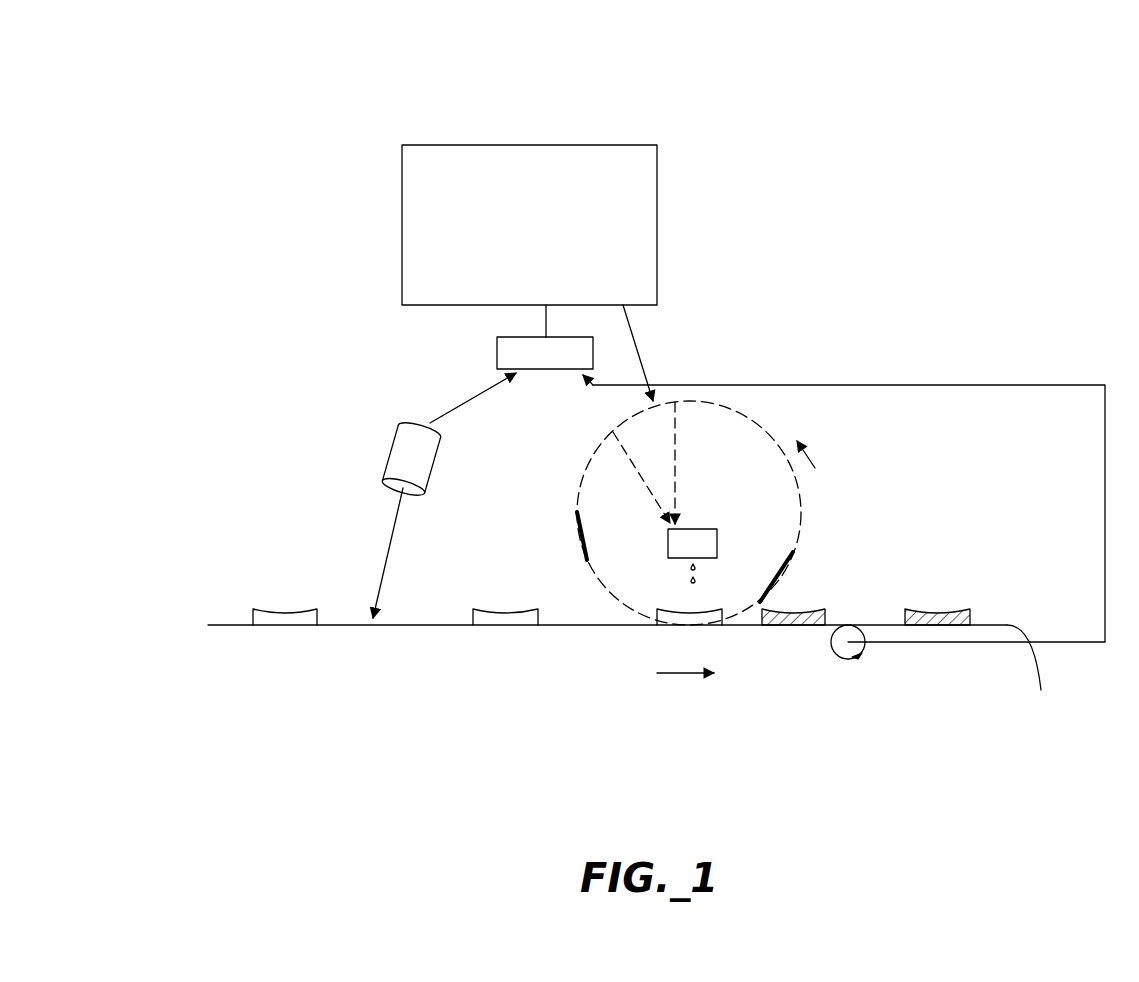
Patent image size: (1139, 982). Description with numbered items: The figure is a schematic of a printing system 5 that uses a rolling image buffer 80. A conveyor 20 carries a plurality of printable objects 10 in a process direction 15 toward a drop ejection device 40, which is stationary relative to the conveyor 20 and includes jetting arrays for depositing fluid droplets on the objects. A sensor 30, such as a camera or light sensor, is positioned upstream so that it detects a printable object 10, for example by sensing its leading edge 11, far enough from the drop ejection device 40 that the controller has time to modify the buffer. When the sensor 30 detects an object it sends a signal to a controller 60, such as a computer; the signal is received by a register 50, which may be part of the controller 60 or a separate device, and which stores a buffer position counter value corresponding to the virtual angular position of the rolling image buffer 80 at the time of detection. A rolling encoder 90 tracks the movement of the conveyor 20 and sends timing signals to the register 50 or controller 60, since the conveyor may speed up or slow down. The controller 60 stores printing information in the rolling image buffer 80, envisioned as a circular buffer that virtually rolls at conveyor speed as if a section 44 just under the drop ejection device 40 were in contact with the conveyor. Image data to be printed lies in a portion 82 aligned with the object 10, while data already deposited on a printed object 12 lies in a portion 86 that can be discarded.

The printing system 5 is at (326, 84).
The printable object 10 is at (283, 611).
The leading edge 11 is at (538, 627).
The printed object 12 is at (805, 613).
The process direction 15 is at (682, 675).
The conveyor 20 is at (422, 627).
The sensor 30 is at (411, 466).
The drop ejection device 40 is at (707, 551).
The section 44 is at (692, 627).
The register 50 is at (558, 364).
The controller 60 is at (543, 236).
The rolling image buffer 80 is at (805, 515).
The portion of the rolling buffer 82 is at (588, 562).
The portion of the buffer 86 is at (780, 578).
The rolling encoder 90 is at (847, 660).